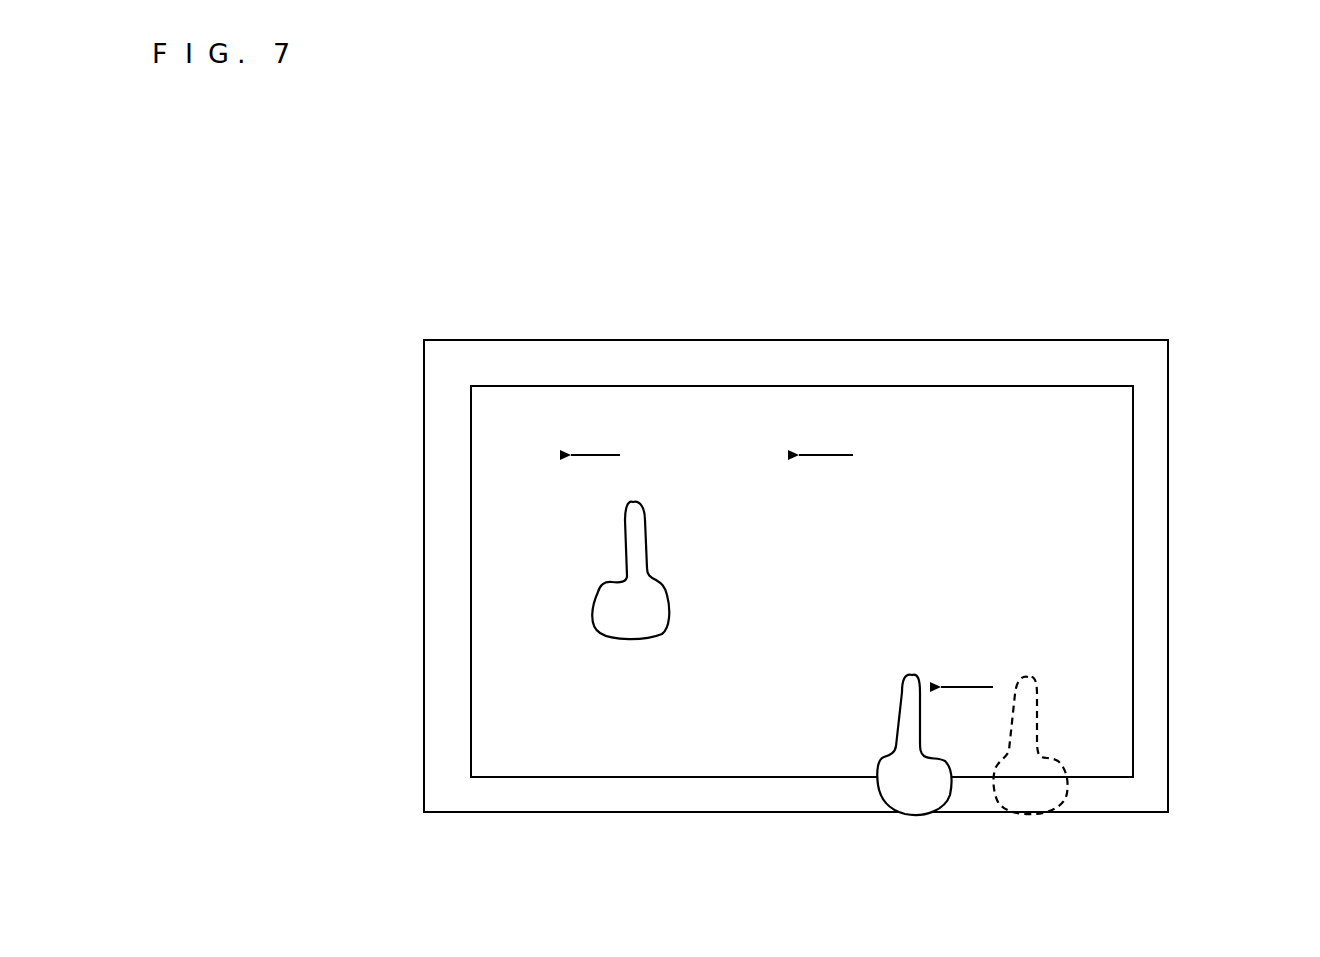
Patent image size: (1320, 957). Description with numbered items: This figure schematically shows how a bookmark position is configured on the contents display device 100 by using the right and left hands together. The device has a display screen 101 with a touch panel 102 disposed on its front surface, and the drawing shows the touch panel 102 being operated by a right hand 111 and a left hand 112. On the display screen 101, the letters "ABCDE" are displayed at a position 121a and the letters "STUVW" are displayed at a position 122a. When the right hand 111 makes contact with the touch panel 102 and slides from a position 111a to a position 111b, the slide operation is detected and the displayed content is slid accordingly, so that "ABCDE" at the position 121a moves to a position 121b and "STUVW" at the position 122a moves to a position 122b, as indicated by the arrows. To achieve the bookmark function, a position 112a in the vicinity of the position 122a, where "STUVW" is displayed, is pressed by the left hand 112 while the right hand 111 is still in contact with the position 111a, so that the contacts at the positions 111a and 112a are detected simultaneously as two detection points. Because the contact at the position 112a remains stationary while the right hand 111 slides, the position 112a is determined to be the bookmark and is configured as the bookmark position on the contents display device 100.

The contents display device 100 is at (535, 149).
The display screen 101 is at (423, 572).
The touch panel 102 is at (470, 692).
The right hand 111 is at (898, 803).
The position 111a is at (1027, 678).
The position 111b is at (915, 680).
The left hand 112 is at (636, 622).
The position 112a is at (625, 505).
The position 121a is at (880, 420).
The position 121b is at (775, 420).
The position 122a is at (648, 420).
The position 122b is at (554, 420).